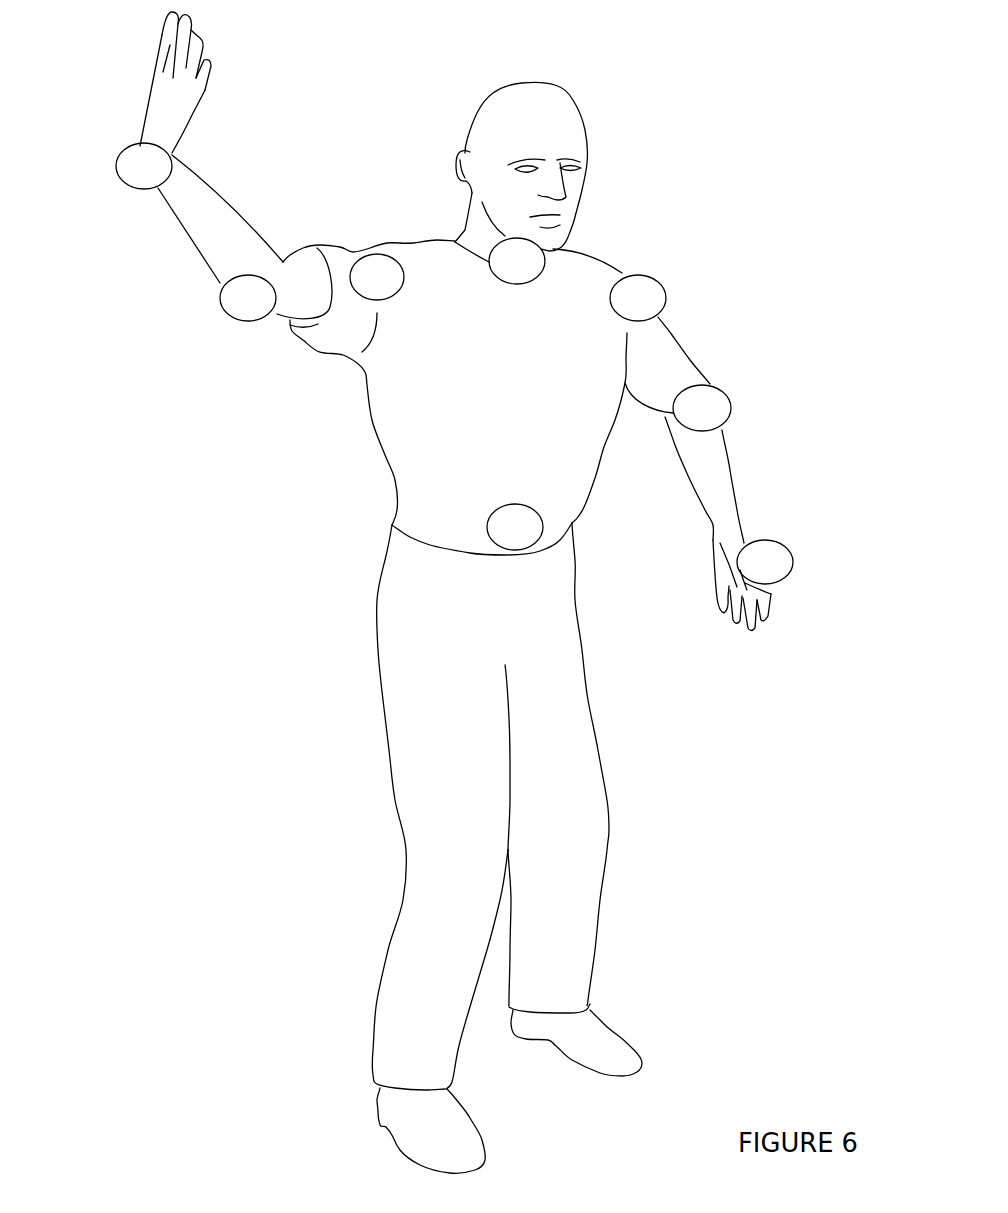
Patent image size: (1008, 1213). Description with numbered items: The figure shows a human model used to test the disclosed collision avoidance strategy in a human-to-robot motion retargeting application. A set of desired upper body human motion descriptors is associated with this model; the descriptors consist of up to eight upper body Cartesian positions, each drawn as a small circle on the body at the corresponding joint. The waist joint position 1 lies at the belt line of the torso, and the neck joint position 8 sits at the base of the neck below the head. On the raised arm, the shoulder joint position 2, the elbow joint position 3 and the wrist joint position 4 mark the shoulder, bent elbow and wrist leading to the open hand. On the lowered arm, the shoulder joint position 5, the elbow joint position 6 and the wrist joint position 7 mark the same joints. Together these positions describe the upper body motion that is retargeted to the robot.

The waist joint position 1 is at (523, 557).
The shoulder joint position 2 is at (370, 173).
The elbow joint position 3 is at (208, 318).
The wrist joint position 4 is at (80, 148).
The shoulder joint position 5 is at (718, 232).
The elbow joint position 6 is at (781, 368).
The wrist joint position 7 is at (836, 540).
The neck joint position 8 is at (523, 290).